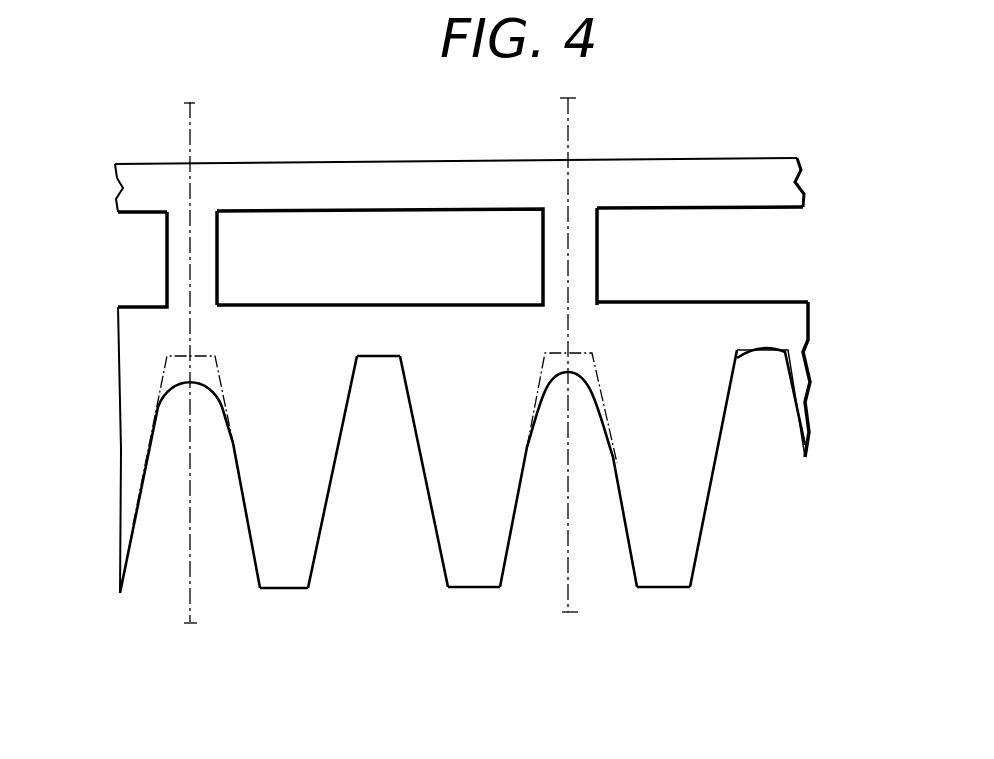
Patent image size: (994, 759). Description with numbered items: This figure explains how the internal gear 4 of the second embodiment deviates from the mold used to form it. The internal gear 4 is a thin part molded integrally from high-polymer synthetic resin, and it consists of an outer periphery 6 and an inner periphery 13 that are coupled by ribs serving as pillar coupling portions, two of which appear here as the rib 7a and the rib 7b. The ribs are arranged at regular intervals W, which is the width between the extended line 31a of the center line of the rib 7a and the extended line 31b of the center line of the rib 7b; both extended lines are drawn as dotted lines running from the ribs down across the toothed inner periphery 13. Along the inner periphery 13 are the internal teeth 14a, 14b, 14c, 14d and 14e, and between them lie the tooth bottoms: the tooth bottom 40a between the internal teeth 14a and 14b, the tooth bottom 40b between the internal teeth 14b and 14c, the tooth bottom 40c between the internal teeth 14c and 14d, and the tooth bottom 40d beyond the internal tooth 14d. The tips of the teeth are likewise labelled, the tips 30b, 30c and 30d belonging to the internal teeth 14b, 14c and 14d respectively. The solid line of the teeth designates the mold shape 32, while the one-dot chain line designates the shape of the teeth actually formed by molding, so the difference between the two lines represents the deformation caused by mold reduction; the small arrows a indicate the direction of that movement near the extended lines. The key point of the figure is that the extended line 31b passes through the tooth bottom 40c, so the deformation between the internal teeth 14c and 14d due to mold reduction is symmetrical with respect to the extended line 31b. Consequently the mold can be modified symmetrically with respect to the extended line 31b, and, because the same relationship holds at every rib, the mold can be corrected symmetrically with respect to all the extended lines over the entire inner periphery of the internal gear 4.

The internal gear 4 is at (737, 165).
The outer periphery 6 is at (780, 173).
The rib 7a is at (175, 255).
The rib 7b is at (584, 247).
The inner periphery 13 is at (703, 322).
The internal tooth 14a is at (130, 493).
The internal tooth 14b is at (275, 503).
The internal tooth 14c is at (428, 510).
The internal tooth 14d is at (668, 535).
The internal tooth 14e is at (808, 402).
The tip of internal tooth 30b is at (293, 593).
The tip of internal tooth 30c is at (478, 590).
The tip of internal tooth 30d is at (667, 590).
The extended line of center line of rib 31a is at (192, 143).
The extended line of center line of rib 31b is at (572, 140).
The mold shape 32 is at (313, 573).
The tooth bottom 40a is at (163, 392).
The tooth bottom 40b is at (388, 358).
The tooth bottom 40c is at (535, 368).
The tooth bottom 40d is at (745, 352).
The regular interval W is at (189, 115).
The flow direction a is at (178, 306).